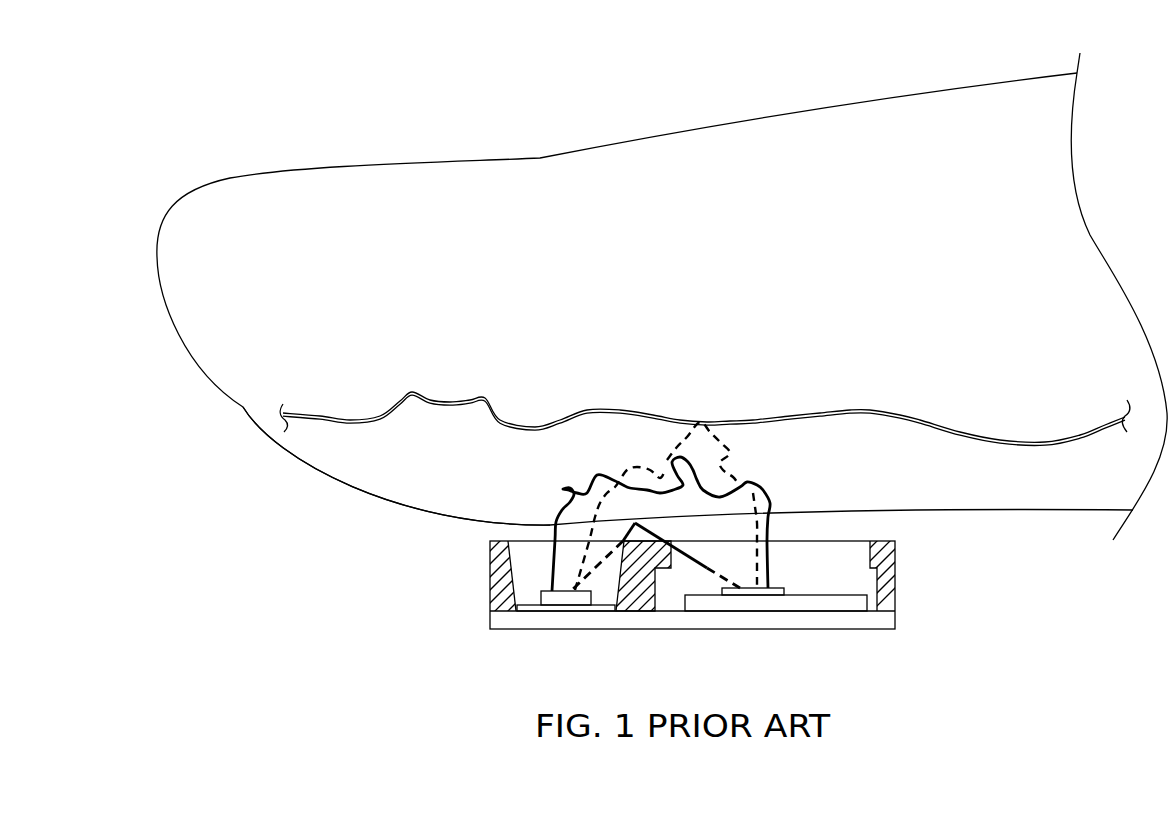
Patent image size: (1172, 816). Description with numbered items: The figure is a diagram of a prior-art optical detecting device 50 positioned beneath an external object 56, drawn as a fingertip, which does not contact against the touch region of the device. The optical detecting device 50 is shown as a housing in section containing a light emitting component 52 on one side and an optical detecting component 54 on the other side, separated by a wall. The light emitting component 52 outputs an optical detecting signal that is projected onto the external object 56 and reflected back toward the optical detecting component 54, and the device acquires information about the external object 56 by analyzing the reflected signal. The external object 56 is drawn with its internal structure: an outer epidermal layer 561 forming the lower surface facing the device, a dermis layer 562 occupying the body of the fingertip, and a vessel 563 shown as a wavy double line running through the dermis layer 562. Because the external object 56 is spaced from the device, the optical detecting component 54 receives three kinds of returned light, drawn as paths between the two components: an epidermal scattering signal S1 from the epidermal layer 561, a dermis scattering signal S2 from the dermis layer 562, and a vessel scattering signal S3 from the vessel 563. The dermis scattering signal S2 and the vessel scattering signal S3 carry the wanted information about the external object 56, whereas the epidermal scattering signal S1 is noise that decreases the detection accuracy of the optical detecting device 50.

The external object 56 is at (283, 118).
The epidermal layer 561 is at (426, 513).
The dermis layer 562 is at (607, 285).
The vessel 563 is at (465, 400).
The optical detecting device 50 is at (927, 602).
The light emitting component 52 is at (565, 596).
The optical detecting component 54 is at (835, 603).
The epidermal scattering signal S1 is at (700, 574).
The dermis scattering signal S2 is at (767, 485).
The vessel scattering signal S3 is at (667, 460).